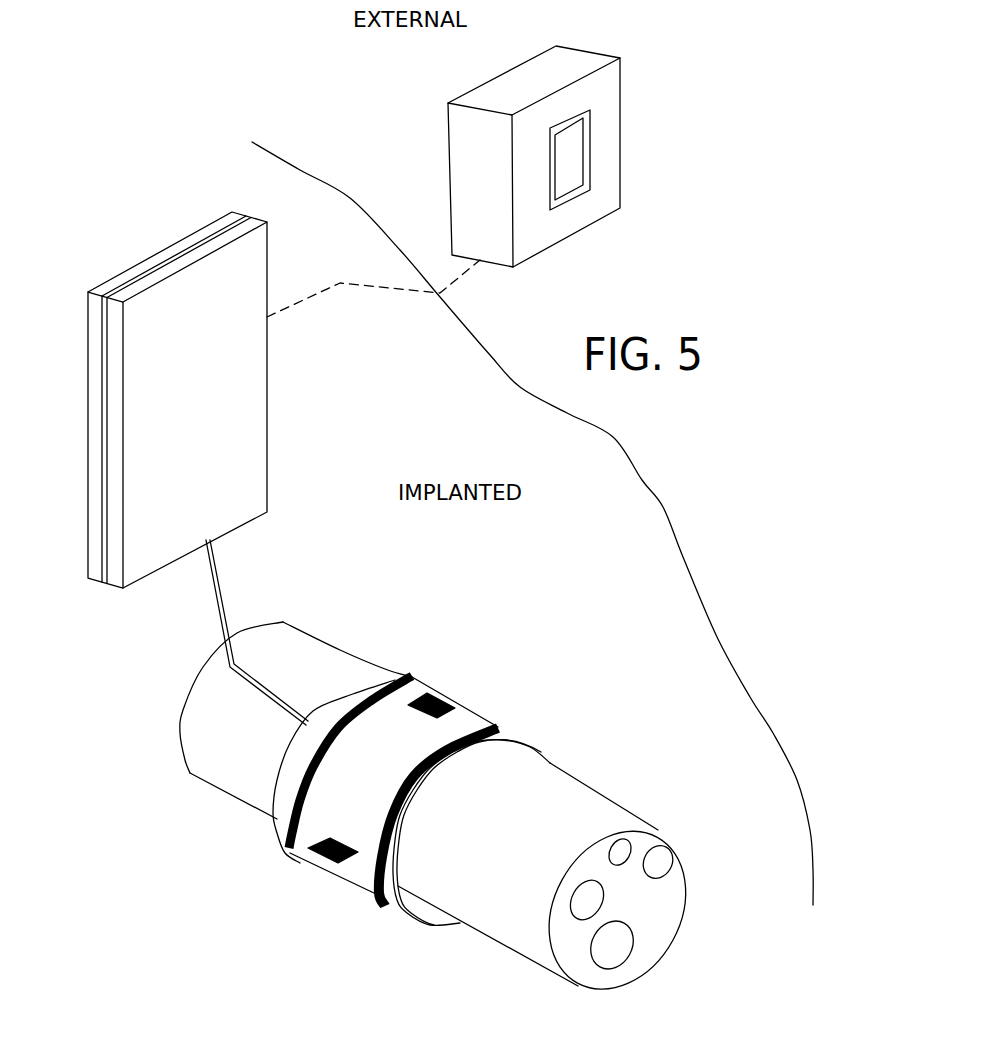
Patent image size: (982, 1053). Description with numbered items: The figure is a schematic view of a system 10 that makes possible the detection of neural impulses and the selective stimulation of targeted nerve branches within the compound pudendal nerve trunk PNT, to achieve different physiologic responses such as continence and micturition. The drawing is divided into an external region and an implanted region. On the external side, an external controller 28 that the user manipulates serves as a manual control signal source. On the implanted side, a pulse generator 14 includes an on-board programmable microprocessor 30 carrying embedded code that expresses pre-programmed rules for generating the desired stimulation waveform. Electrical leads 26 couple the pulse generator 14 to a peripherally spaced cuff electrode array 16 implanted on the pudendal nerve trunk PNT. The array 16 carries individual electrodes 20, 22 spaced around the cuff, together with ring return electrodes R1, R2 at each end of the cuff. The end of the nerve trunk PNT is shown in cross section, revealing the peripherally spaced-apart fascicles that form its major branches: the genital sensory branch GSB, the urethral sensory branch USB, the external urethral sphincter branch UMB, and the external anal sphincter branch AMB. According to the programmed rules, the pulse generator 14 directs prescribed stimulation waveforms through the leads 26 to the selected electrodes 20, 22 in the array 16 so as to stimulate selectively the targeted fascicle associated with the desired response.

The system 10 is at (367, 113).
The pulse generator 14 is at (245, 398).
The electrode array 16 is at (465, 707).
The electrode 20 is at (438, 695).
The electrode 22 is at (328, 858).
The electrical leads 26 is at (227, 598).
The external controller 28 is at (577, 43).
The programmable microprocessor 30 is at (190, 242).
The ring return electrode R1 is at (298, 763).
The ring return electrode R2 is at (372, 892).
The pudendal nerve trunk PNT is at (562, 813).
The genital sensory branch GSB is at (618, 845).
The urethral sensory branch USB is at (660, 860).
The external anal sphincter branch AMB is at (573, 907).
The external urethral sphincter branch UMB is at (605, 947).